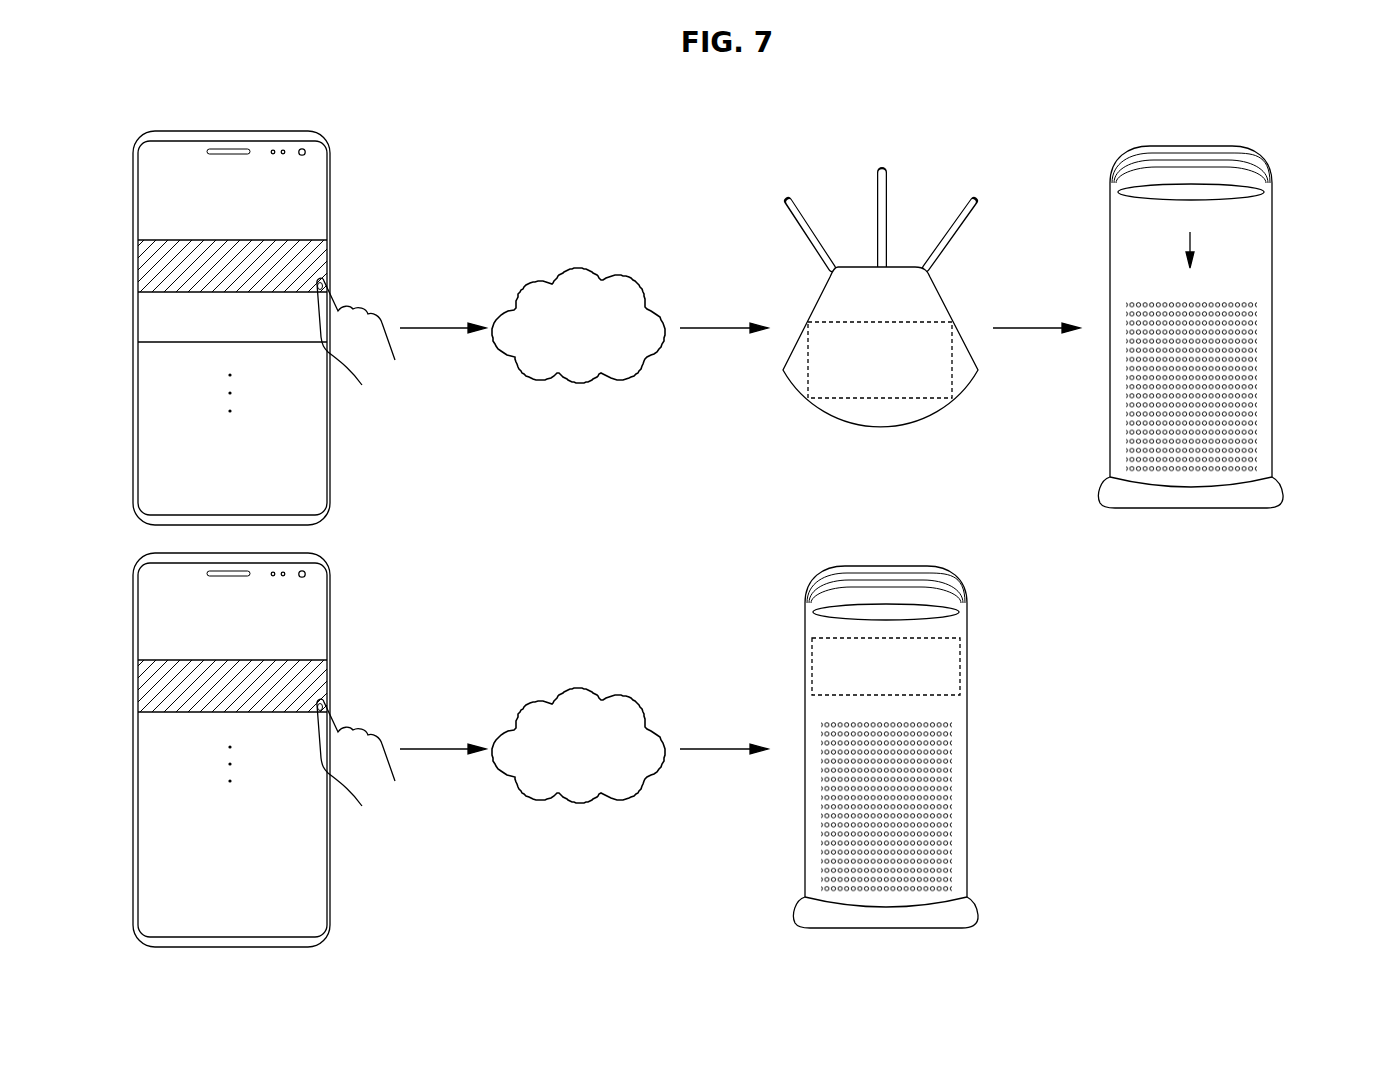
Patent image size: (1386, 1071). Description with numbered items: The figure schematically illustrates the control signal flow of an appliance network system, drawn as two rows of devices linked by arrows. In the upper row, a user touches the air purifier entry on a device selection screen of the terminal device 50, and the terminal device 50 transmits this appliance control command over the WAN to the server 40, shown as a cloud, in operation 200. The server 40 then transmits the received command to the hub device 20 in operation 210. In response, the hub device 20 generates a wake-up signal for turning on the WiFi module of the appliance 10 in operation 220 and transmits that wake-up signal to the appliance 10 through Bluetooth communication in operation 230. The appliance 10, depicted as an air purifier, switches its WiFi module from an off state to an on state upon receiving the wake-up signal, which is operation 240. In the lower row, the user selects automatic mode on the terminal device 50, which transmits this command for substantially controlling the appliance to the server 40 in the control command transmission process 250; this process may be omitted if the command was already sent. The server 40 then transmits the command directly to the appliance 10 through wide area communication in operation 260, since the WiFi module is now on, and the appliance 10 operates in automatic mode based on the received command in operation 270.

The appliance 10 is at (1068, 515).
The hub device 20 is at (880, 317).
The server 40 is at (581, 266).
The terminal device 50 is at (330, 150).
The operation of transmitting appliance control command to server 200 is at (436, 325).
The operation of transmitting appliance control command to hub device 210 is at (720, 325).
The operation of generating wake-up signal 220 is at (900, 398).
The operation of transmitting wake-up signal 230 is at (1028, 325).
The operation of switching WiFi module on 240 is at (1192, 243).
The control command transmission process 250 is at (438, 746).
The operation of transmitting appliance control command to appliance 260 is at (722, 746).
The operation of controlling appliance 270 is at (960, 665).